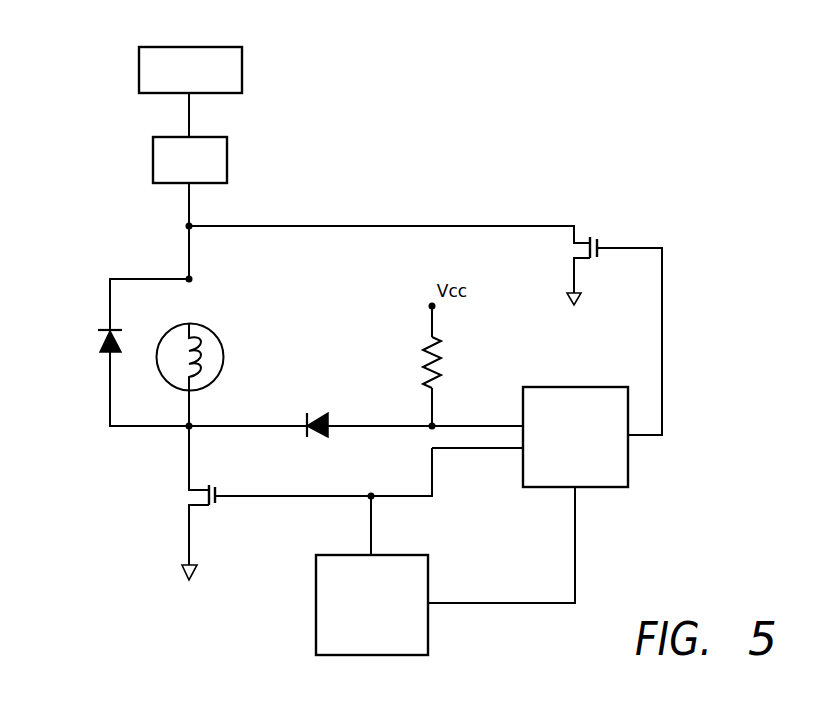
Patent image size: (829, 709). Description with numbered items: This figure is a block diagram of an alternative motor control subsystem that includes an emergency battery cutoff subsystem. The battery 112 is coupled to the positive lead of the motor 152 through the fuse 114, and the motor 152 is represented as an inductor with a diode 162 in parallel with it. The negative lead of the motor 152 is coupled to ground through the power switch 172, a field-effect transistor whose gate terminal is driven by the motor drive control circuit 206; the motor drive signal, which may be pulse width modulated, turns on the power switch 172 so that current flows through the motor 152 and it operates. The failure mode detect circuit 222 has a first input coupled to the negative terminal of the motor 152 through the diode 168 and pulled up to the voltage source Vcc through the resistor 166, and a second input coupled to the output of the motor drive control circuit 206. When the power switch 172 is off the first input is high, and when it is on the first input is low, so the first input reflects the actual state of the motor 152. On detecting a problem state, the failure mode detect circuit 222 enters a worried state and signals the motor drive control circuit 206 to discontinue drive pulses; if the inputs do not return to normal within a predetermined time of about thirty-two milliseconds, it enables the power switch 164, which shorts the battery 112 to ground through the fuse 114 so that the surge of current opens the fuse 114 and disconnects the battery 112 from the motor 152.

The battery 112 is at (242, 68).
The fuse 114 is at (227, 158).
The motor 152 is at (215, 335).
The diode 162 is at (103, 342).
The power switch 164 is at (600, 243).
The resistor 166 is at (440, 352).
The diode 168 is at (318, 413).
The power switch 172 is at (217, 492).
The motor drive control circuit 206 is at (316, 575).
The failure mode detect circuit 222 is at (630, 457).